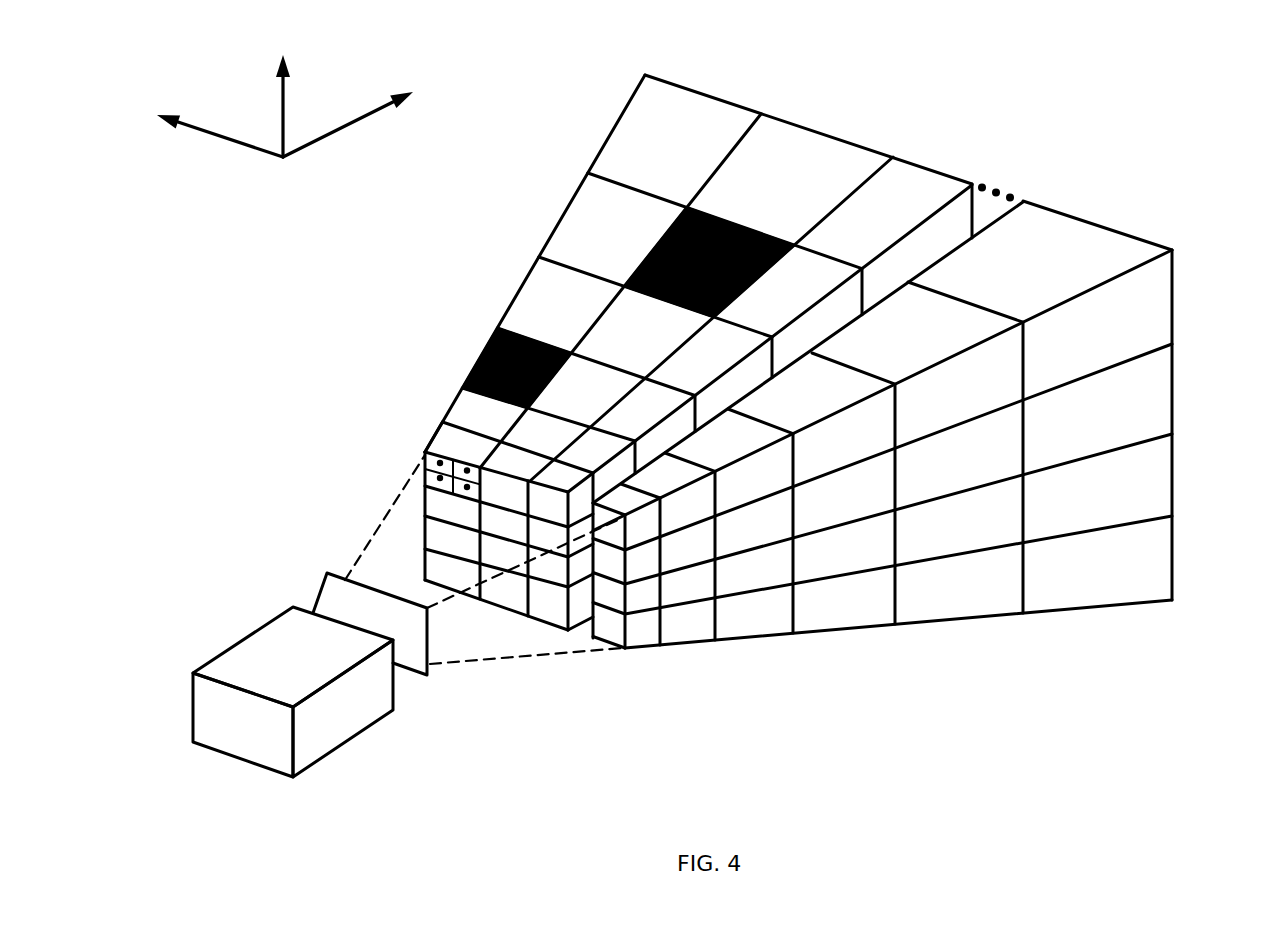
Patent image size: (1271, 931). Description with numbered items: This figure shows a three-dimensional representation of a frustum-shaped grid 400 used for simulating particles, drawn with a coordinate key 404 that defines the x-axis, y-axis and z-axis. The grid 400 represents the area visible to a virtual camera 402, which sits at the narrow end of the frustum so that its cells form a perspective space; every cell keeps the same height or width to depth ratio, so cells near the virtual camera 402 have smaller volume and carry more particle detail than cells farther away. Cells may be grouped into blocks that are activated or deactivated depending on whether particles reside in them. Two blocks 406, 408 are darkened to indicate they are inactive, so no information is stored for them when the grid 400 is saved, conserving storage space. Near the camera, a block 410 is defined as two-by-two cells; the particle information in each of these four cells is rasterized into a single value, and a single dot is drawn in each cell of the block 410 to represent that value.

The frustum-shaped grid 400 is at (1142, 95).
The virtual camera 402 is at (220, 751).
The coordinate key 404 is at (275, 160).
The block 406 is at (554, 385).
The block 408 is at (662, 236).
The block 410 is at (411, 428).